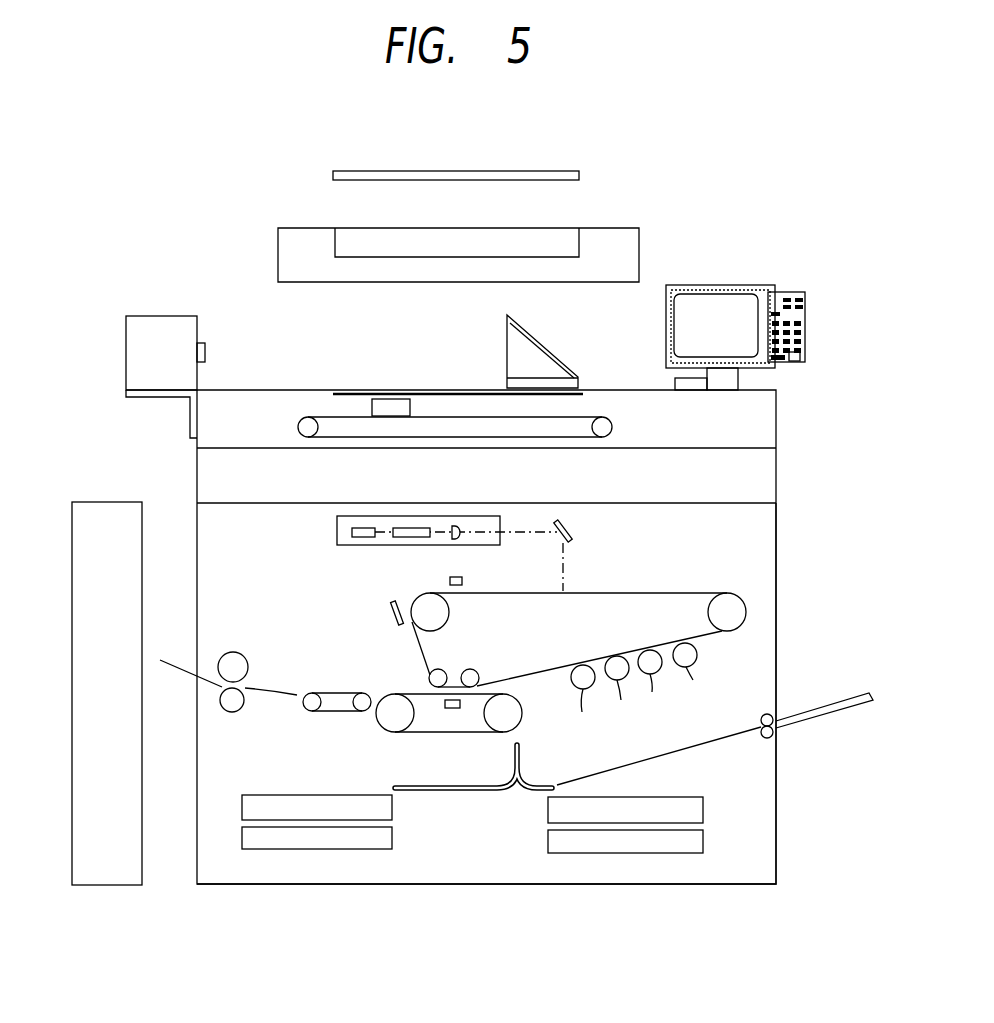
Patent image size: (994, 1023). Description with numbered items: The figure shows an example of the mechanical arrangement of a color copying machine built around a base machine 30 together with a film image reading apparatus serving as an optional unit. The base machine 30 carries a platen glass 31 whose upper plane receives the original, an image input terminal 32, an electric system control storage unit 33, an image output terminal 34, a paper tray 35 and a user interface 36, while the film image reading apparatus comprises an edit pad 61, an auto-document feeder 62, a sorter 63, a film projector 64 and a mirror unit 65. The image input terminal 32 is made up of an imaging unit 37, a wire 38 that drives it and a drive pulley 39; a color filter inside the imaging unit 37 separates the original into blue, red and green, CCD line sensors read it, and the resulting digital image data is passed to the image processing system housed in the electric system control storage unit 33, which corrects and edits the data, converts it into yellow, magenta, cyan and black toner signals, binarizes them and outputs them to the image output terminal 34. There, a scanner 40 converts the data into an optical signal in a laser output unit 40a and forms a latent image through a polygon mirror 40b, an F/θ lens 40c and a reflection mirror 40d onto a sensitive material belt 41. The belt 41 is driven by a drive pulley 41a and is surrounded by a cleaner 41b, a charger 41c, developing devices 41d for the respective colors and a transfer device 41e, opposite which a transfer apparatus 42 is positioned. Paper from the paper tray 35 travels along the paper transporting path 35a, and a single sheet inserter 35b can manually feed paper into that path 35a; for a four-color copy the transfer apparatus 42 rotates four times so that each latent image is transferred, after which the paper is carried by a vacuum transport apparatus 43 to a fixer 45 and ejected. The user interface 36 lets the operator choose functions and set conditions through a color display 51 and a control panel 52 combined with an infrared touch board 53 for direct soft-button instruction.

The base machine 30 is at (322, 895).
The platen glass 31 is at (428, 393).
The image input terminal (IIT) 32 is at (752, 423).
The electric system control storage unit 33 is at (745, 485).
The image output terminal (IOT) 34 is at (712, 579).
The paper tray 35 is at (531, 819).
The paper transporting path 35a is at (522, 760).
The single sheet inserter (SSI) 35b is at (828, 712).
The user interface (U/I) 36 is at (761, 297).
The imaging unit 37 is at (388, 399).
The wire 38 is at (327, 415).
The drive pulley 39 is at (603, 417).
The scanner 40 is at (446, 551).
The laser output unit 40a is at (355, 541).
The polygon mirror 40b is at (402, 540).
The F/θ lens 40c is at (458, 540).
The reflection mirror 40d is at (575, 531).
The sensitive material belt 41 is at (534, 664).
The drive pulley 41a is at (440, 617).
The cleaner 41b is at (393, 612).
The charger 41c is at (465, 581).
The developing devices 41d is at (582, 733).
The transfer device 41e is at (452, 710).
The transfer apparatus 42 is at (420, 748).
The vacuum transport apparatus 43 is at (320, 716).
The fixer 45 is at (233, 643).
The color display 51 is at (740, 307).
The control panel 52 is at (800, 318).
The infrared touch board 53 is at (681, 287).
The edit pad 61 is at (557, 171).
The auto-document feeder (ADF) 62 is at (622, 228).
The sorter 63 is at (84, 778).
The film projector (F/P) 64 is at (180, 316).
The mirror unit (M/U) 65 is at (531, 355).